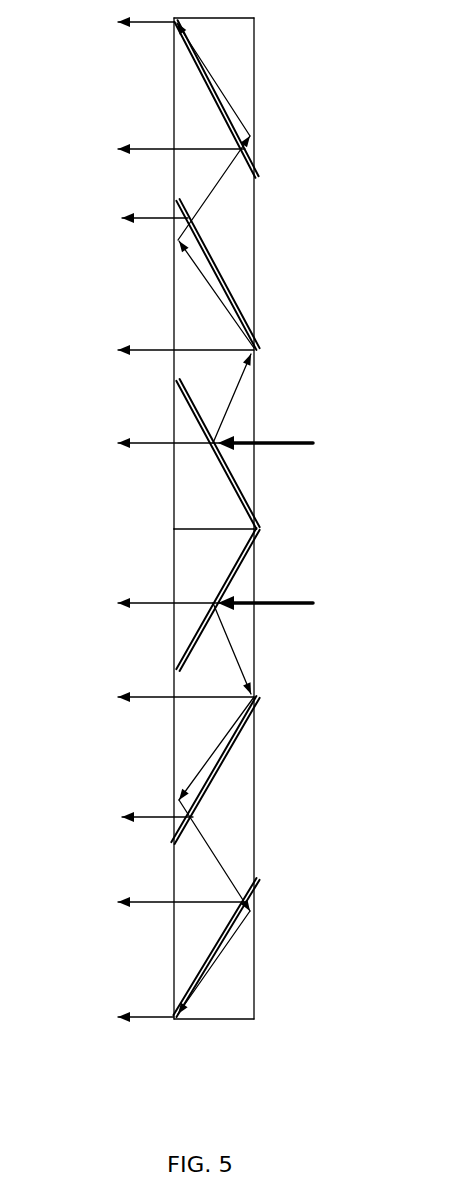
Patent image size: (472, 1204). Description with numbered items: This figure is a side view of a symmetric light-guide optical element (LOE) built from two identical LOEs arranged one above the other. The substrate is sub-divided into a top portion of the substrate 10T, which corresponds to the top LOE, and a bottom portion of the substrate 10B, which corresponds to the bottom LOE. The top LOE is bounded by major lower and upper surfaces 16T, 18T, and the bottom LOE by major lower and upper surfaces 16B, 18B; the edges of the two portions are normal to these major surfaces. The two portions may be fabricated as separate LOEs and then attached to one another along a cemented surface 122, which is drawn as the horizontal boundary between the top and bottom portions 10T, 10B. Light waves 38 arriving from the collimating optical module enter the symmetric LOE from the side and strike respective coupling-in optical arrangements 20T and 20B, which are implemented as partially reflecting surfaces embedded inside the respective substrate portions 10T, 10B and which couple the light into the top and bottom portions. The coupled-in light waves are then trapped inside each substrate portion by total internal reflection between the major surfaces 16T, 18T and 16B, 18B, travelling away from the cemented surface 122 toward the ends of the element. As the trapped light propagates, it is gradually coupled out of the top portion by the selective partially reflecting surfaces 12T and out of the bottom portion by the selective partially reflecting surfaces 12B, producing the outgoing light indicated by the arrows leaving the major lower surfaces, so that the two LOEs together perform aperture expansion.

The top portion of the substrate 10T is at (193, 507).
The bottom portion of the substrate 10B is at (193, 557).
The selective partially reflecting surfaces 12T is at (215, 88).
The selective partially reflecting surfaces 12B is at (228, 760).
The major lower surface 16T is at (173, 283).
The major lower surface 16B is at (173, 768).
The major upper surface 18T is at (255, 235).
The major upper surface 18B is at (253, 827).
The coupling-in optical arrangement 20T is at (245, 495).
The coupling-in optical arrangement 20B is at (240, 567).
The light waves 38 is at (288, 440).
The cemented surface 122 is at (182, 530).